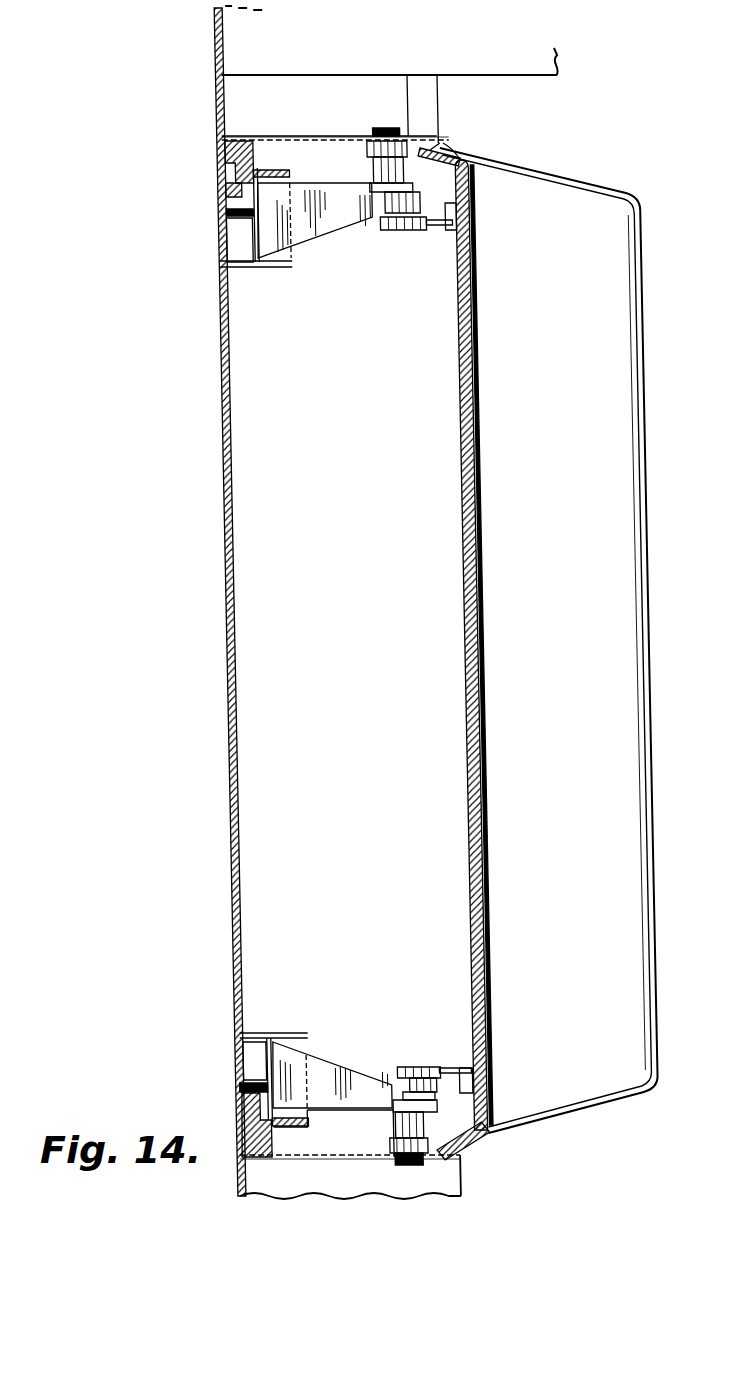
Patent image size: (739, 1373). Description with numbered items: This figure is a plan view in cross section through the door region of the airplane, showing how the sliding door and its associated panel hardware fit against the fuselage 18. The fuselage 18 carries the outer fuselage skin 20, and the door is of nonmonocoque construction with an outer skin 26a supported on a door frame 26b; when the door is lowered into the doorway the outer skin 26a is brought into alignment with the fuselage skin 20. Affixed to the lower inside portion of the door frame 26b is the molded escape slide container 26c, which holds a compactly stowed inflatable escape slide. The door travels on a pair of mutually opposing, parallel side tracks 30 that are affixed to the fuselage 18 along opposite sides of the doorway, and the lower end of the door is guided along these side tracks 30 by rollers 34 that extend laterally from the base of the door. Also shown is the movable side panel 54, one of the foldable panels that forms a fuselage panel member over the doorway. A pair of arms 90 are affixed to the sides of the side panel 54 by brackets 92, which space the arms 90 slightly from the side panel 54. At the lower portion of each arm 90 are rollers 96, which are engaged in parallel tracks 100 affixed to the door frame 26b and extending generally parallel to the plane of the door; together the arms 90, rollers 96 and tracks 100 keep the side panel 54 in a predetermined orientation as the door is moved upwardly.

The fuselage 18 is at (201, 89).
The outer fuselage skin 20 is at (214, 128).
The outer skin 26a is at (214, 430).
The door frame 26b is at (315, 184).
The molded escape slide container 26c is at (607, 632).
The side tracks 30 is at (354, 136).
The rollers 34 is at (383, 128).
The side panel 54 is at (468, 458).
The arms 90 is at (375, 222).
The brackets 92 is at (453, 246).
The rollers 96 is at (396, 216).
The tracks 100 is at (437, 160).